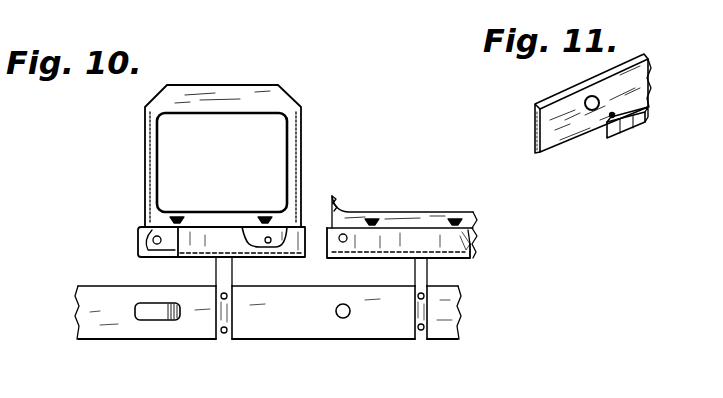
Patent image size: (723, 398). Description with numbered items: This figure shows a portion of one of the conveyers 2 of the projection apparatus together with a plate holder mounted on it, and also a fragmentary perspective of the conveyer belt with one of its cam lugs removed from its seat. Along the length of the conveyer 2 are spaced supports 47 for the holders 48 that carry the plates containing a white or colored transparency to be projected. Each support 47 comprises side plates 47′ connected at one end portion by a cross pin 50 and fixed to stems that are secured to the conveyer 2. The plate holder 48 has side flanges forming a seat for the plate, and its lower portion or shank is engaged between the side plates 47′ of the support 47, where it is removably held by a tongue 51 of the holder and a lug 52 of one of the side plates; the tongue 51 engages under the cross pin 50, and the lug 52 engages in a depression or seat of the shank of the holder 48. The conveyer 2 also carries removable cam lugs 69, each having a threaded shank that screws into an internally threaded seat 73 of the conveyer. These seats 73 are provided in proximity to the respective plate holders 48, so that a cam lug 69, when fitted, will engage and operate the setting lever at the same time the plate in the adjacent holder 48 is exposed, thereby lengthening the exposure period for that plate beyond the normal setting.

In FIG. 10, the conveyer 2 is at (395, 330).
In FIG. 11, the conveyer 2 is at (548, 121).
In FIG. 10, the support 47 is at (233, 271).
In FIG. 10, the side plate 47′ is at (195, 250).
In FIG. 10, the plate holder 48 is at (145, 156).
In FIG. 10, the cross pin 50 is at (160, 237).
In FIG. 10, the tongue 51 is at (138, 244).
In FIG. 10, the lug 52 is at (473, 244).
In FIG. 10, the cam lug 69 is at (168, 313).
In FIG. 11, the cam lug 69 is at (633, 130).
In FIG. 10, the threaded seat 73 is at (340, 319).
In FIG. 11, the threaded seat 73 is at (596, 97).